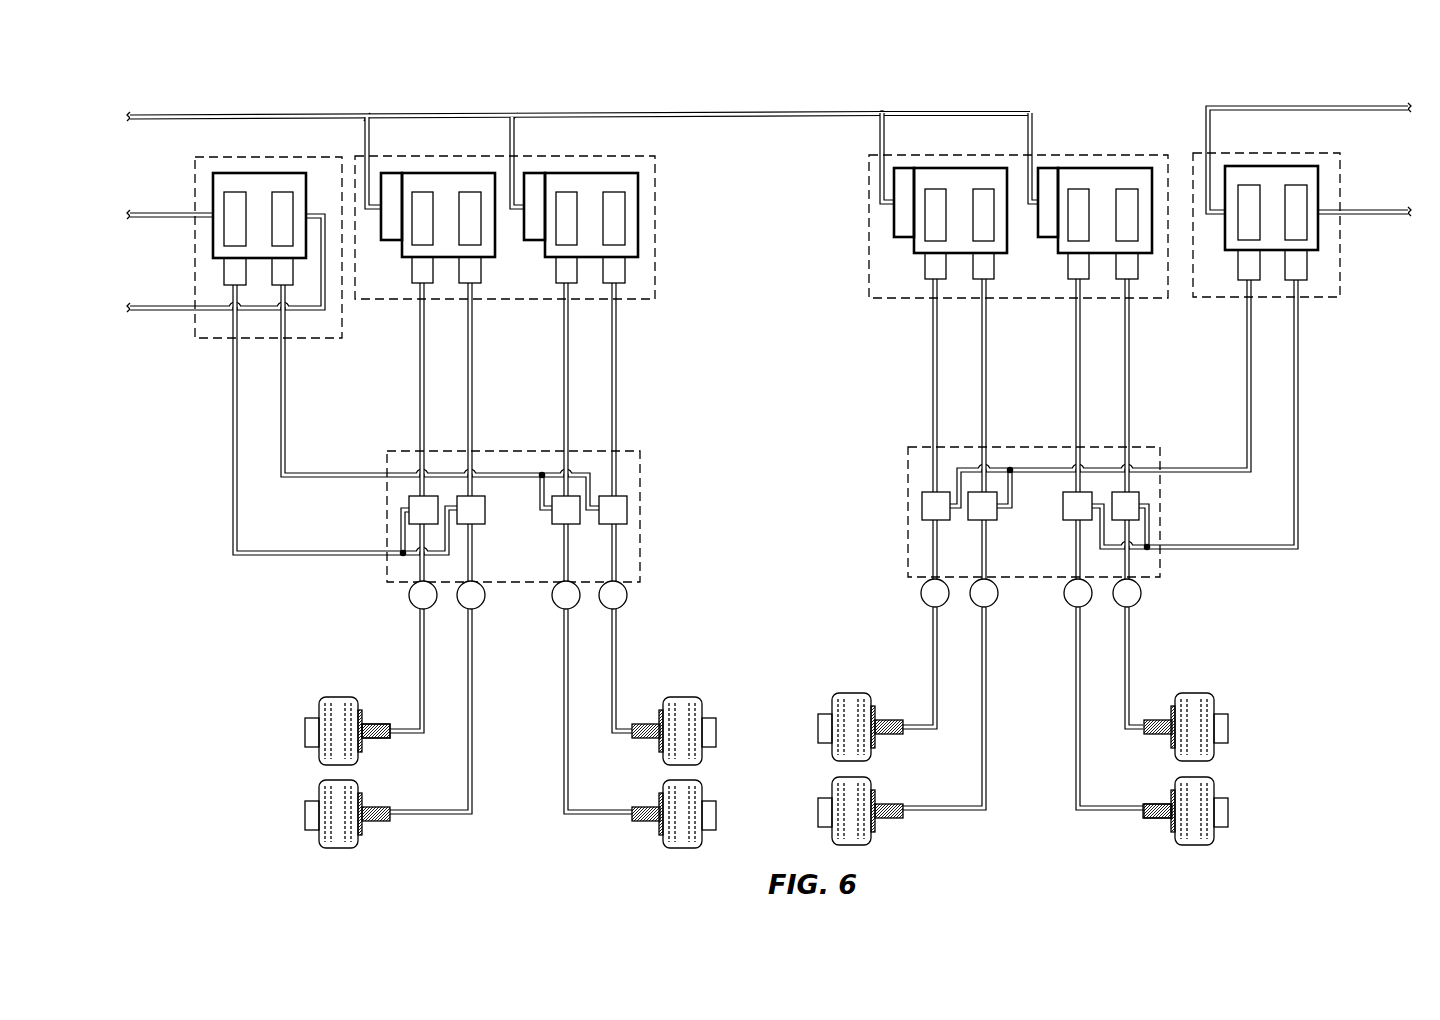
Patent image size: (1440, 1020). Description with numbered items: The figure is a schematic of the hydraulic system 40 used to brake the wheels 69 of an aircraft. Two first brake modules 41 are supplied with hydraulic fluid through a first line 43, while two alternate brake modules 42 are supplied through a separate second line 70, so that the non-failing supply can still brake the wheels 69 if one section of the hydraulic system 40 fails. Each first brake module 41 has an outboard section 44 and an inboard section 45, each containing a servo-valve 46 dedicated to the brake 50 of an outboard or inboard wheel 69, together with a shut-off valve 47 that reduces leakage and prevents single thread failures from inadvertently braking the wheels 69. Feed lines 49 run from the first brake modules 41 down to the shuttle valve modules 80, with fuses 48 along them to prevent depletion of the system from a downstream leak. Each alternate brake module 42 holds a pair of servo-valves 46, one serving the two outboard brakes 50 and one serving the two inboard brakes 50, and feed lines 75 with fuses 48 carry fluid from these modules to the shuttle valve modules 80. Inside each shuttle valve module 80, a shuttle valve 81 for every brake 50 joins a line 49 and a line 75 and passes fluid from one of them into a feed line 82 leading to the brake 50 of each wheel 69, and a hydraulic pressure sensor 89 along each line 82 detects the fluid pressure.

The hydraulic system 40 is at (1310, 71).
The first brake module 41 is at (657, 178).
The alternate brake module 42 is at (210, 340).
The first line 43 is at (302, 110).
The outboard section 44 is at (430, 172).
The inboard section 45 is at (575, 172).
The servo-valve 46 is at (283, 192).
The shut-off valve 47 is at (391, 172).
The fuse 48 is at (272, 272).
The feed line 49 is at (1125, 362).
The brake 50 is at (365, 802).
The wheel 69 is at (315, 788).
The second line 70 is at (190, 214).
The feed line 75 is at (281, 418).
The shuttle valve module 80 is at (642, 470).
The shuttle valve 81 is at (475, 496).
The feed line 82 is at (612, 680).
The hydraulic pressure sensor 89 is at (604, 605).